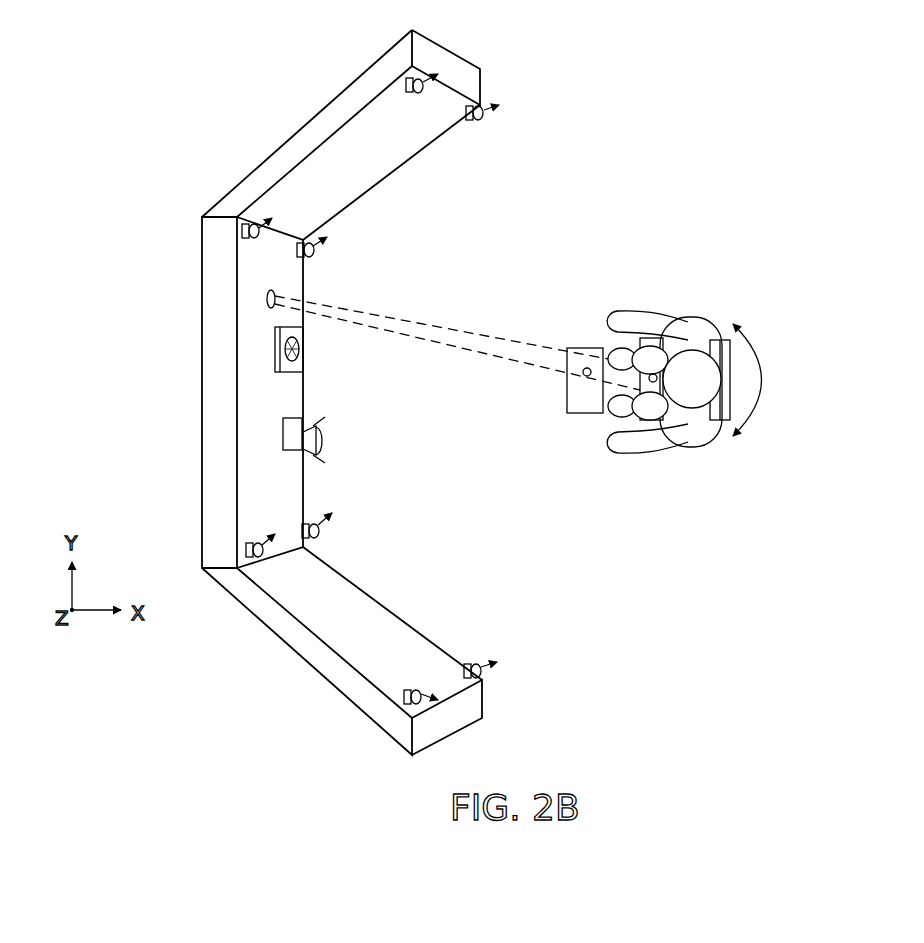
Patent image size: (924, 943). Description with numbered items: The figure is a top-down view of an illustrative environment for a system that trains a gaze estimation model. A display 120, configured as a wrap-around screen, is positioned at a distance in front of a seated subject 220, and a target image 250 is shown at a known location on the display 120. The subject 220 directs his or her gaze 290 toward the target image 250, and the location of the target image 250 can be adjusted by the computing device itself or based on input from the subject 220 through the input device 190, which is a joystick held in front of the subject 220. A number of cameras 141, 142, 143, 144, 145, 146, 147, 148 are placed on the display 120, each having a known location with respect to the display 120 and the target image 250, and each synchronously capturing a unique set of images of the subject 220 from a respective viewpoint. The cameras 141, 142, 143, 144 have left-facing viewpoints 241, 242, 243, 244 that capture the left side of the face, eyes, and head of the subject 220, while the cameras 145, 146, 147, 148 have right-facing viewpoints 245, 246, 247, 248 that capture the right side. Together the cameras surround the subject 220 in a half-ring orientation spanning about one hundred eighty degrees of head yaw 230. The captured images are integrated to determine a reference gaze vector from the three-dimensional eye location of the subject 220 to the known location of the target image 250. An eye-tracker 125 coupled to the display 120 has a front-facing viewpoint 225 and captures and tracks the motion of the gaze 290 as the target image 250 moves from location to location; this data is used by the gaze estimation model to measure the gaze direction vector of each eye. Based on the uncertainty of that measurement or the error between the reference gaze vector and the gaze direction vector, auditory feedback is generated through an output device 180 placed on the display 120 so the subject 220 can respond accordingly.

The display 120 is at (216, 272).
The eye-tracker 125 is at (283, 433).
The camera 141 is at (405, 693).
The camera 142 is at (482, 673).
The camera 143 is at (250, 543).
The camera 144 is at (308, 524).
The camera 145 is at (243, 224).
The camera 146 is at (298, 243).
The camera 147 is at (408, 86).
The camera 148 is at (480, 108).
The output device 180 is at (275, 348).
The input device 190 is at (584, 375).
The subject 220 is at (840, 265).
The front-facing viewpoint 225 is at (328, 440).
The head yaw 230 is at (763, 382).
The left-facing viewpoint 241 is at (428, 688).
The left-facing viewpoint 242 is at (486, 661).
The left-facing viewpoint 243 is at (264, 566).
The left-facing viewpoint 244 is at (320, 545).
The right-facing viewpoint 245 is at (263, 246).
The right-facing viewpoint 246 is at (322, 252).
The right-facing viewpoint 247 is at (421, 93).
The right-facing viewpoint 248 is at (486, 120).
The target image 250 is at (266, 299).
The gaze 290 is at (566, 348).